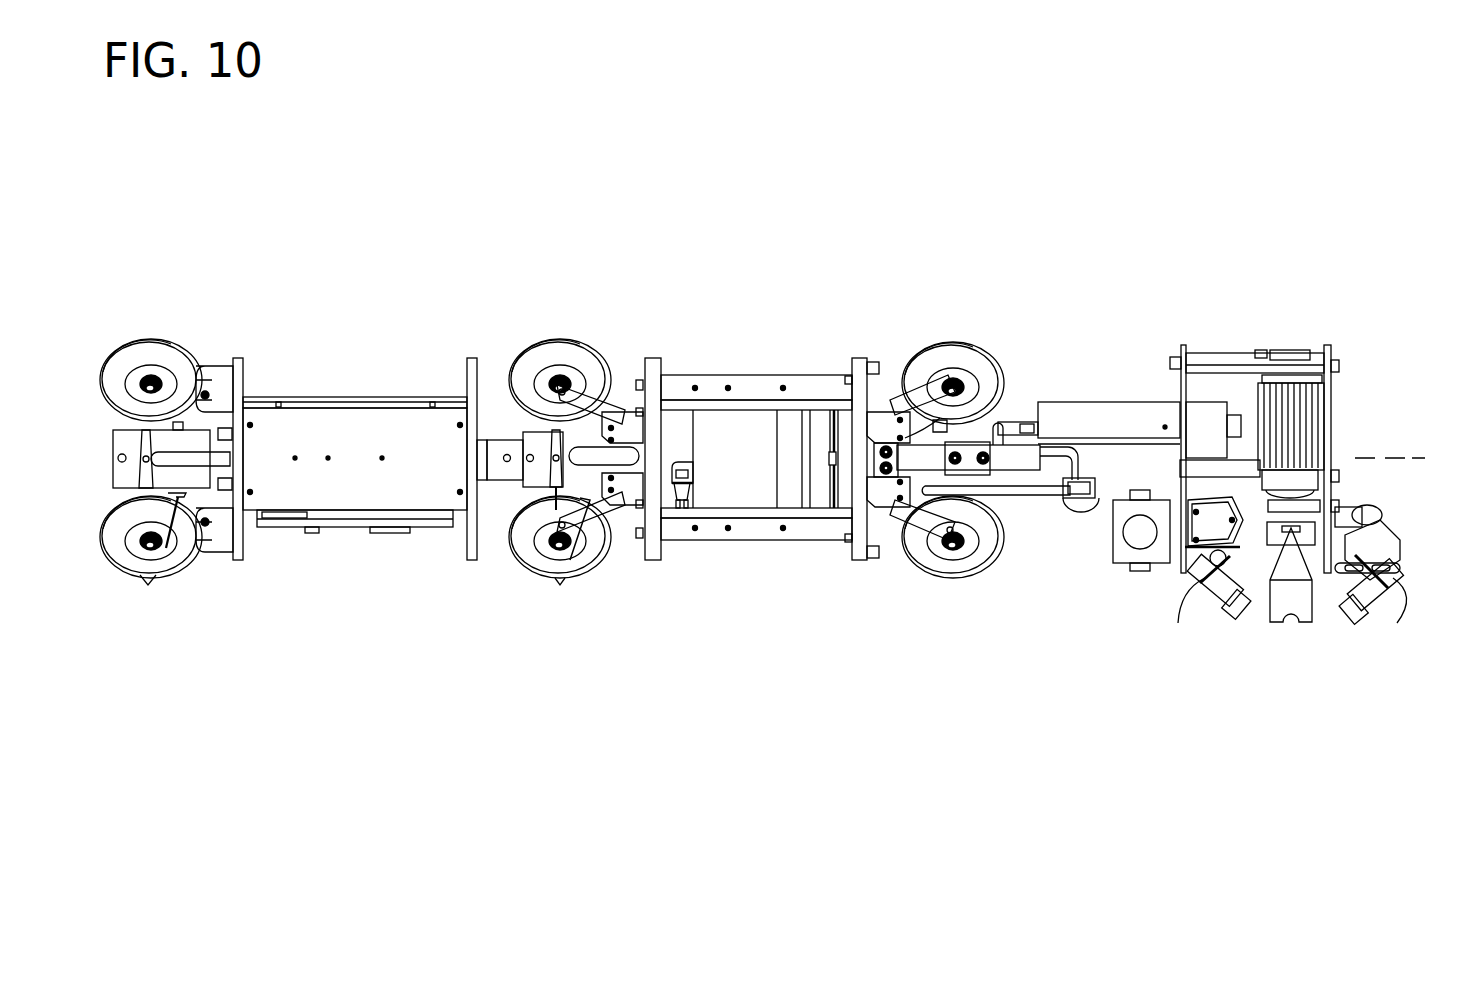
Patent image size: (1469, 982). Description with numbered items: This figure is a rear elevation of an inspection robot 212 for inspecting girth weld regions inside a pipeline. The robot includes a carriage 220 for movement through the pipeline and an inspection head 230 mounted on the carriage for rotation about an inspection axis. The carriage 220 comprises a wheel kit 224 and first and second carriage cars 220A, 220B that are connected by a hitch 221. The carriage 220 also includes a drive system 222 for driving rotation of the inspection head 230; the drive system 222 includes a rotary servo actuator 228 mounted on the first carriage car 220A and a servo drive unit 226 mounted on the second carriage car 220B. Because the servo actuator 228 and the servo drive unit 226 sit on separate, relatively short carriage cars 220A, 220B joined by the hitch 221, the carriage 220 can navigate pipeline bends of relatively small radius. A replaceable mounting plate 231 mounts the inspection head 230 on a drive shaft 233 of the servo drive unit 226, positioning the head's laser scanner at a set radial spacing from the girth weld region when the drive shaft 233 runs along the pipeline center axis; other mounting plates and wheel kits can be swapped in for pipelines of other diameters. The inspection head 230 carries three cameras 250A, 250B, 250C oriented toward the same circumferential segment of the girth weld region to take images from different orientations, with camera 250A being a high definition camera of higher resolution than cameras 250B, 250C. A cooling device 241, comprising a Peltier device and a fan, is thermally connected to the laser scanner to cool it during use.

The inspection robot 212 is at (270, 793).
The carriage 220 is at (643, 592).
The first carriage car 220A is at (860, 560).
The second carriage car 220B is at (240, 560).
The hitch 221 is at (510, 487).
The drive system 222 is at (773, 455).
The wheel kit 224 is at (570, 340).
The servo drive unit 226 is at (360, 485).
The rotary servo actuator 228 is at (820, 420).
The inspection head 230 is at (1213, 345).
The mounting plate 231 is at (1181, 345).
The drive shaft 233 is at (930, 440).
The cooling device 241 is at (1160, 415).
The high definition camera 250A is at (1313, 398).
The camera 250B is at (1380, 585).
The camera 250C is at (1200, 583).